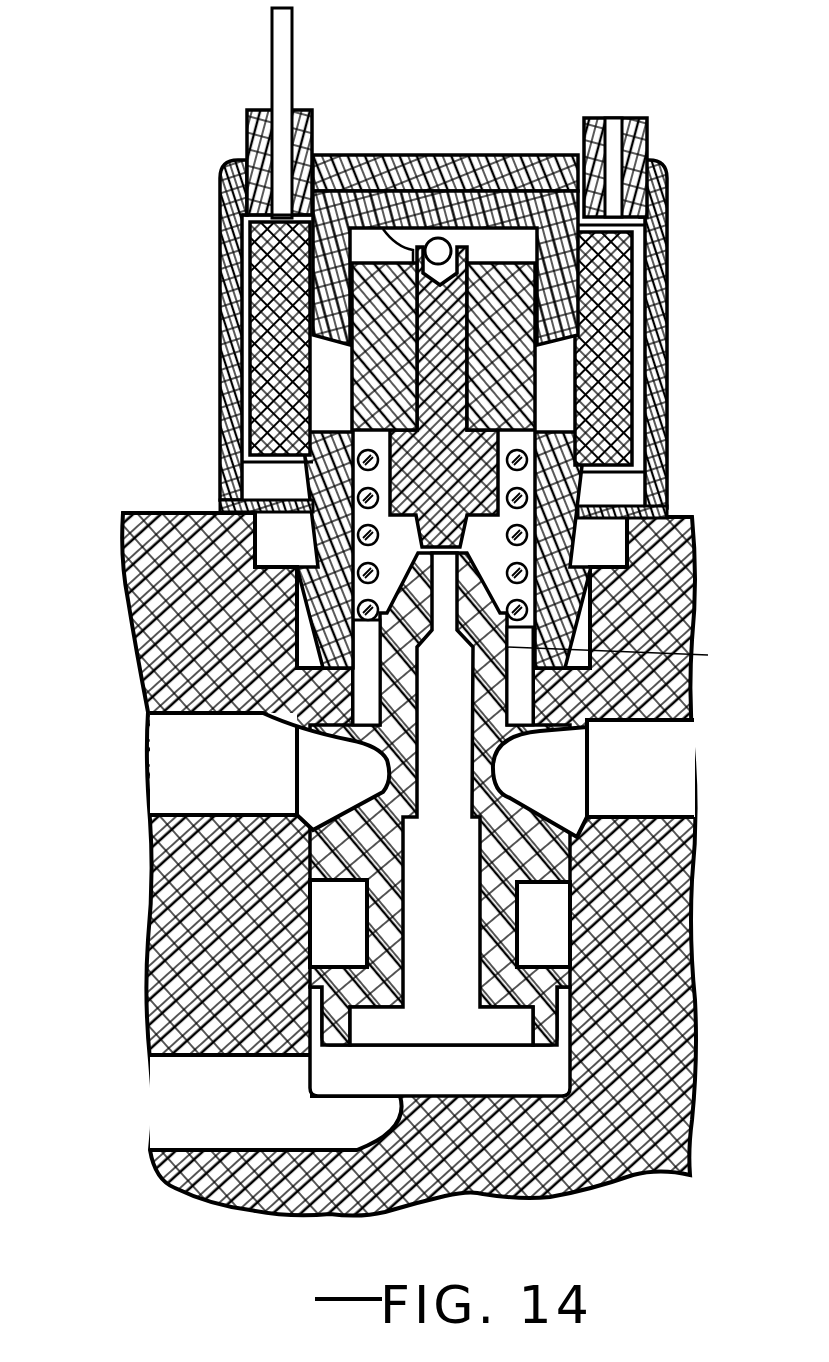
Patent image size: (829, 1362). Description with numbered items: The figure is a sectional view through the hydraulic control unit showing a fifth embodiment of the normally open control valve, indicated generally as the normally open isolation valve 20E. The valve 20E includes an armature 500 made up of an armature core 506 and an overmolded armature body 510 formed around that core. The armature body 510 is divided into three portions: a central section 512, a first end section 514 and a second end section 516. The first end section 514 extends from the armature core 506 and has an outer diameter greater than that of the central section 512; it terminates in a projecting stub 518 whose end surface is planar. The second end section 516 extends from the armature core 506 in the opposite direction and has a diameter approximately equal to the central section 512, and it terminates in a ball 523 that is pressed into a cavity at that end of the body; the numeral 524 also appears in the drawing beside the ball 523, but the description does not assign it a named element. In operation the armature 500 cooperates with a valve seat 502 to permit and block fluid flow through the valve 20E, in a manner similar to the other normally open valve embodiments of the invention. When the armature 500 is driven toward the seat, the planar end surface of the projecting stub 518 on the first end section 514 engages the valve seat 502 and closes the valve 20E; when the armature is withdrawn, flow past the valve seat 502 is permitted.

The normally open isolation valve 20E is at (395, 612).
The armature 500 is at (540, 297).
The valve seat 502 is at (305, 860).
The armature core 506 is at (372, 365).
The overmolded armature body 510 is at (405, 307).
The central section 512 is at (452, 333).
The first end section 514 is at (425, 481).
The second end section 516 is at (402, 240).
The projecting stub 518 is at (430, 532).
The ball 523 is at (428, 240).
The ball 524 is at (448, 243).